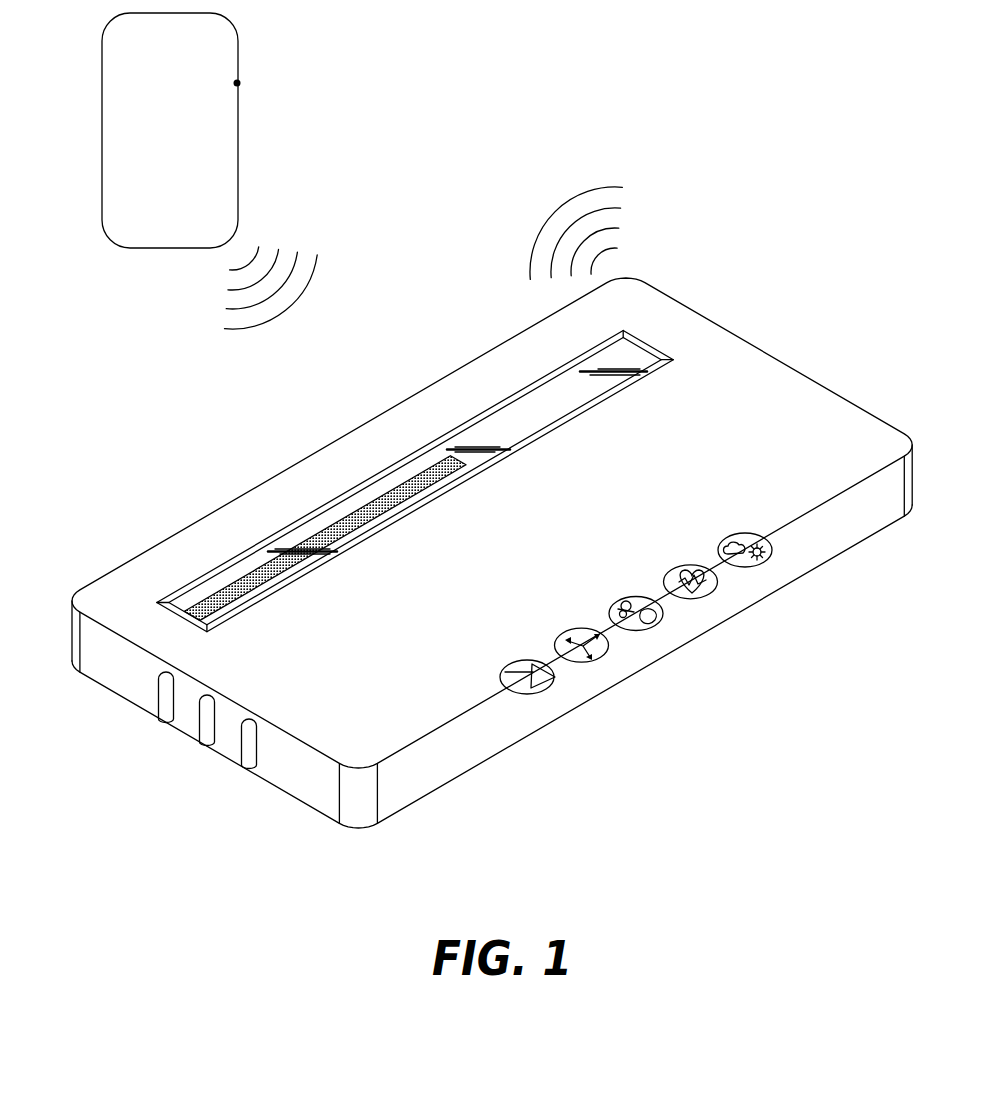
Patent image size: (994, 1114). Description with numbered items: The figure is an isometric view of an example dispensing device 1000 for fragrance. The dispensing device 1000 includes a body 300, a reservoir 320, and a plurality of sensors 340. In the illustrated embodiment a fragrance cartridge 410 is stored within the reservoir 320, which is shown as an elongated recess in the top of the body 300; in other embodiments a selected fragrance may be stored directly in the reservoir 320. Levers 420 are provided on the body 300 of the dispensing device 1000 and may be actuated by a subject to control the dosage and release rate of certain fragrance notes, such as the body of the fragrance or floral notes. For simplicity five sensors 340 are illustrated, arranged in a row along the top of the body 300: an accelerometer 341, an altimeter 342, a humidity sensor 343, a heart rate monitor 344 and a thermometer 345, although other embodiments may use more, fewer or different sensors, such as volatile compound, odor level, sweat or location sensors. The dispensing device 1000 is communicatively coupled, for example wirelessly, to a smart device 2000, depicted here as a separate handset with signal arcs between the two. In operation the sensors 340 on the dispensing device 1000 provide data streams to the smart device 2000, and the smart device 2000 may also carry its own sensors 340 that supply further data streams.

The dispensing device 1000 is at (404, 321).
The smart device 2000 is at (90, 140).
The body 300 is at (668, 333).
The reservoir 320 is at (537, 410).
The sensors 340 is at (539, 412).
The accelerometer 341 is at (552, 666).
The altimeter 342 is at (606, 634).
The humidity sensor 343 is at (661, 602).
The heart rate monitor 344 is at (715, 570).
The thermometer 345 is at (775, 573).
The fragrance cartridge 410 is at (343, 533).
The levers 420 is at (255, 785).